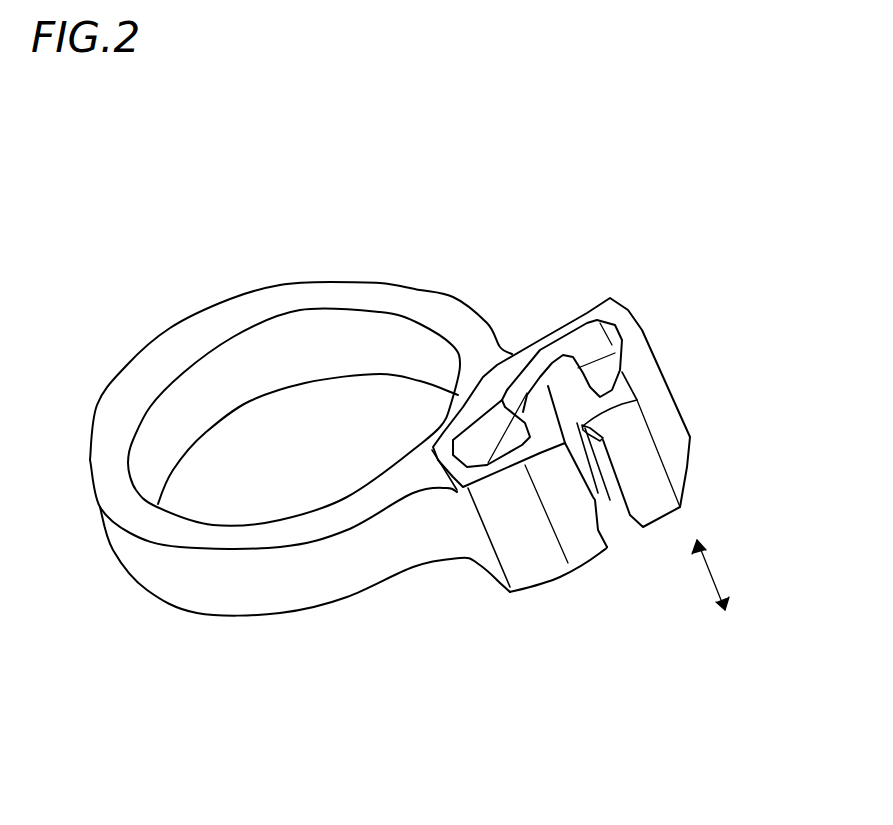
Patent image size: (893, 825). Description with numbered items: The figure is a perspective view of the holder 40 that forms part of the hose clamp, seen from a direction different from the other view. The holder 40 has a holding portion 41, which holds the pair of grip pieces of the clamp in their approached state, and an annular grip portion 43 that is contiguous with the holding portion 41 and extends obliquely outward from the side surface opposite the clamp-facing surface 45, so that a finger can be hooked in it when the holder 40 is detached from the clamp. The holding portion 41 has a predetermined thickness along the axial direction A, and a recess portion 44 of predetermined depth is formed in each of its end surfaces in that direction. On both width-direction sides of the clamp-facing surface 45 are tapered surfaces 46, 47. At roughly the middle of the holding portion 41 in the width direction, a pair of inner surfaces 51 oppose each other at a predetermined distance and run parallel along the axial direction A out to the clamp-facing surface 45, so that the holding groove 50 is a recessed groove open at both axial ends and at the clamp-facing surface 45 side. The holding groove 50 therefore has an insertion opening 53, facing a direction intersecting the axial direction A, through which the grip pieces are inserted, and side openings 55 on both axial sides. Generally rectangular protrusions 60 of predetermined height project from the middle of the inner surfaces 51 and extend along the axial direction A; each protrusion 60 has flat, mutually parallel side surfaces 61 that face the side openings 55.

The holder 40 is at (326, 268).
The holding portion 41 is at (627, 317).
The annular grip portion 43 is at (200, 600).
The recess portion 44 is at (593, 330).
The clamp-facing surface 45 is at (680, 507).
The tapered surface 46 is at (673, 417).
The tapered surface 47 is at (522, 577).
The holding groove 50 is at (549, 378).
The inner surface 51 is at (538, 387).
The insertion opening 53 is at (613, 520).
The side opening 55 is at (545, 388).
The protrusion 60 is at (607, 547).
The side surface 61 is at (570, 563).
The axial direction A is at (713, 572).